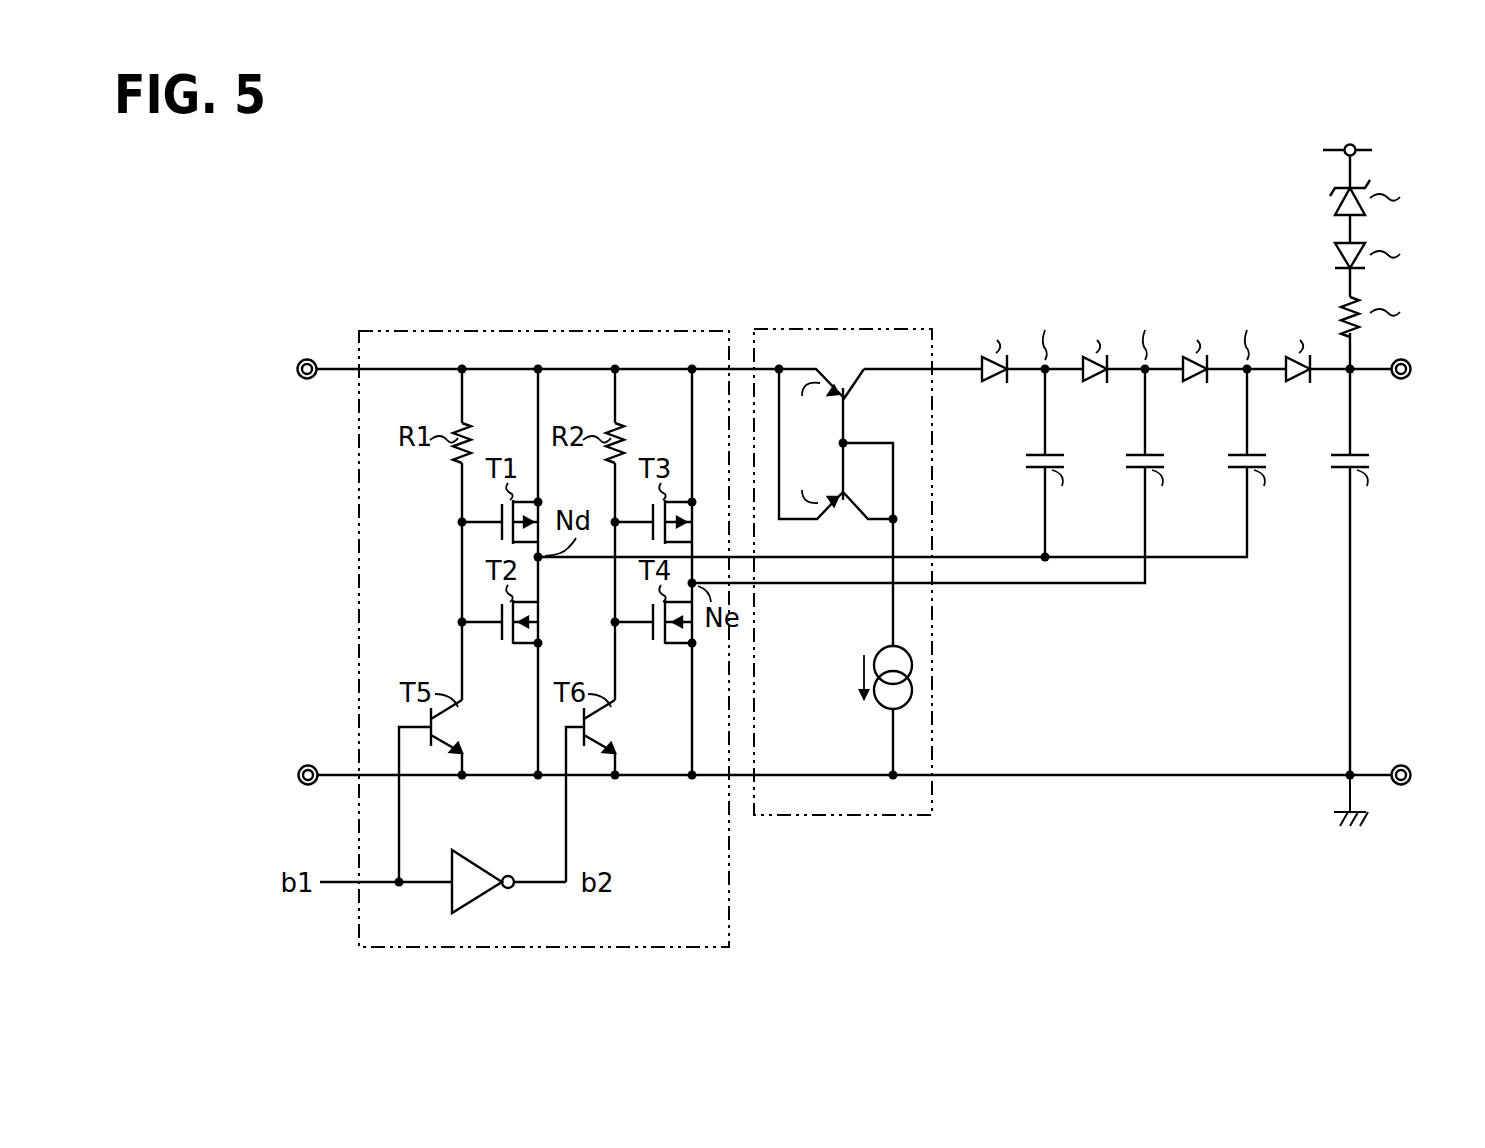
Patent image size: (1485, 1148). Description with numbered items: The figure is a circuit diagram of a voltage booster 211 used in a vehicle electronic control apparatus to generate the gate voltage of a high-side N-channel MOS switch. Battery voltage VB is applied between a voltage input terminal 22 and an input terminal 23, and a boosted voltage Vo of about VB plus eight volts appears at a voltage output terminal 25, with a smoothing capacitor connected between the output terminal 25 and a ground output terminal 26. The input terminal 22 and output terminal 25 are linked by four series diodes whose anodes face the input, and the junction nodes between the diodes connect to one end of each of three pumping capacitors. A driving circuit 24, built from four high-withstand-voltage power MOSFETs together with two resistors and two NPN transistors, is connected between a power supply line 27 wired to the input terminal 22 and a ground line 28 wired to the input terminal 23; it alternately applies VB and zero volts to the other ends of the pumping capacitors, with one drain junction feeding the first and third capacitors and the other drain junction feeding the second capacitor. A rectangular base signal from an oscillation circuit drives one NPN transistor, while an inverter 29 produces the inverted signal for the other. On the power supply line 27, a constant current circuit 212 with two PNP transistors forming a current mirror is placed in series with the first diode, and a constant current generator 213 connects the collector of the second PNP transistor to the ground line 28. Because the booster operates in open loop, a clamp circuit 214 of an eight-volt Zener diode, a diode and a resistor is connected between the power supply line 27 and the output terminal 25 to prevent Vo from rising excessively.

The voltage input terminal 22 is at (301, 360).
The input terminal 23 is at (302, 768).
The driving circuit 24 is at (359, 568).
The voltage output terminal 25 is at (1405, 379).
The ground output terminal 26 is at (1398, 765).
The power supply line 27 is at (337, 362).
The power supply line (ground line) 28 is at (336, 770).
The inverter 29 is at (475, 860).
The voltage booster 211 is at (970, 250).
The constant current circuit 212 is at (833, 329).
The constant current generator 213 is at (876, 651).
The clamp circuit 214 is at (1303, 240).